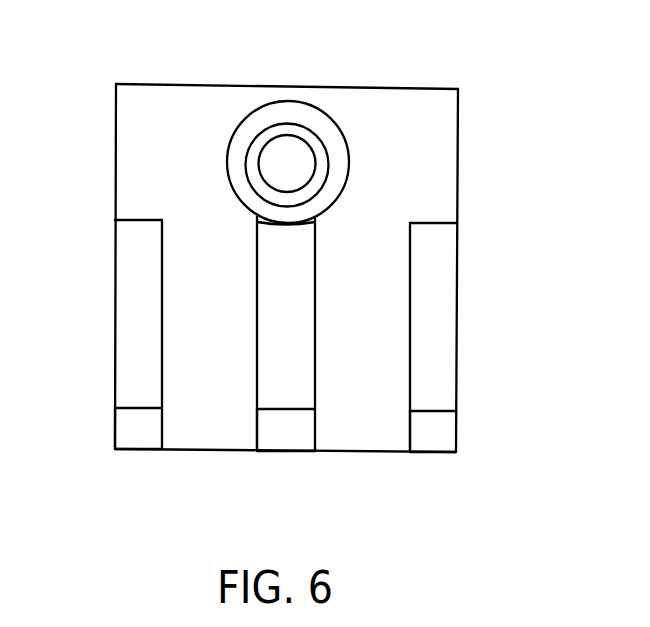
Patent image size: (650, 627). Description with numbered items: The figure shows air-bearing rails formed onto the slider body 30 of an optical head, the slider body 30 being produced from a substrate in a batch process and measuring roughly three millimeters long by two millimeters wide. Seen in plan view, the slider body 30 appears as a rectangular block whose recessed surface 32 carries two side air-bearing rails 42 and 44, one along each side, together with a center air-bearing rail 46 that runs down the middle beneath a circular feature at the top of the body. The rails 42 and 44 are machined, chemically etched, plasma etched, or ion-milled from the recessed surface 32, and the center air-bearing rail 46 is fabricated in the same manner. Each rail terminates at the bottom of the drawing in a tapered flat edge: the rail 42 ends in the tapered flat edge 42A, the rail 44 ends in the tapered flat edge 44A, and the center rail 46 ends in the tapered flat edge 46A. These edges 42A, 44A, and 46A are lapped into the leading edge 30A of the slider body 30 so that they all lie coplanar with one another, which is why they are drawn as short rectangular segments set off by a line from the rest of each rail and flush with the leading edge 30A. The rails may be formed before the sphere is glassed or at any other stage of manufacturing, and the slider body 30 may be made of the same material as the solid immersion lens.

The slider body 30 is at (141, 84).
The leading edge 30A is at (198, 450).
The recessed surface 32 is at (453, 148).
The air-bearing rail 42 is at (125, 390).
The tapered flat edge 42A is at (142, 442).
The air-bearing rail 44 is at (447, 395).
The tapered flat edge 44A is at (440, 447).
The center air-bearing rail 46 is at (308, 305).
The tapered flat edge 46A is at (292, 443).